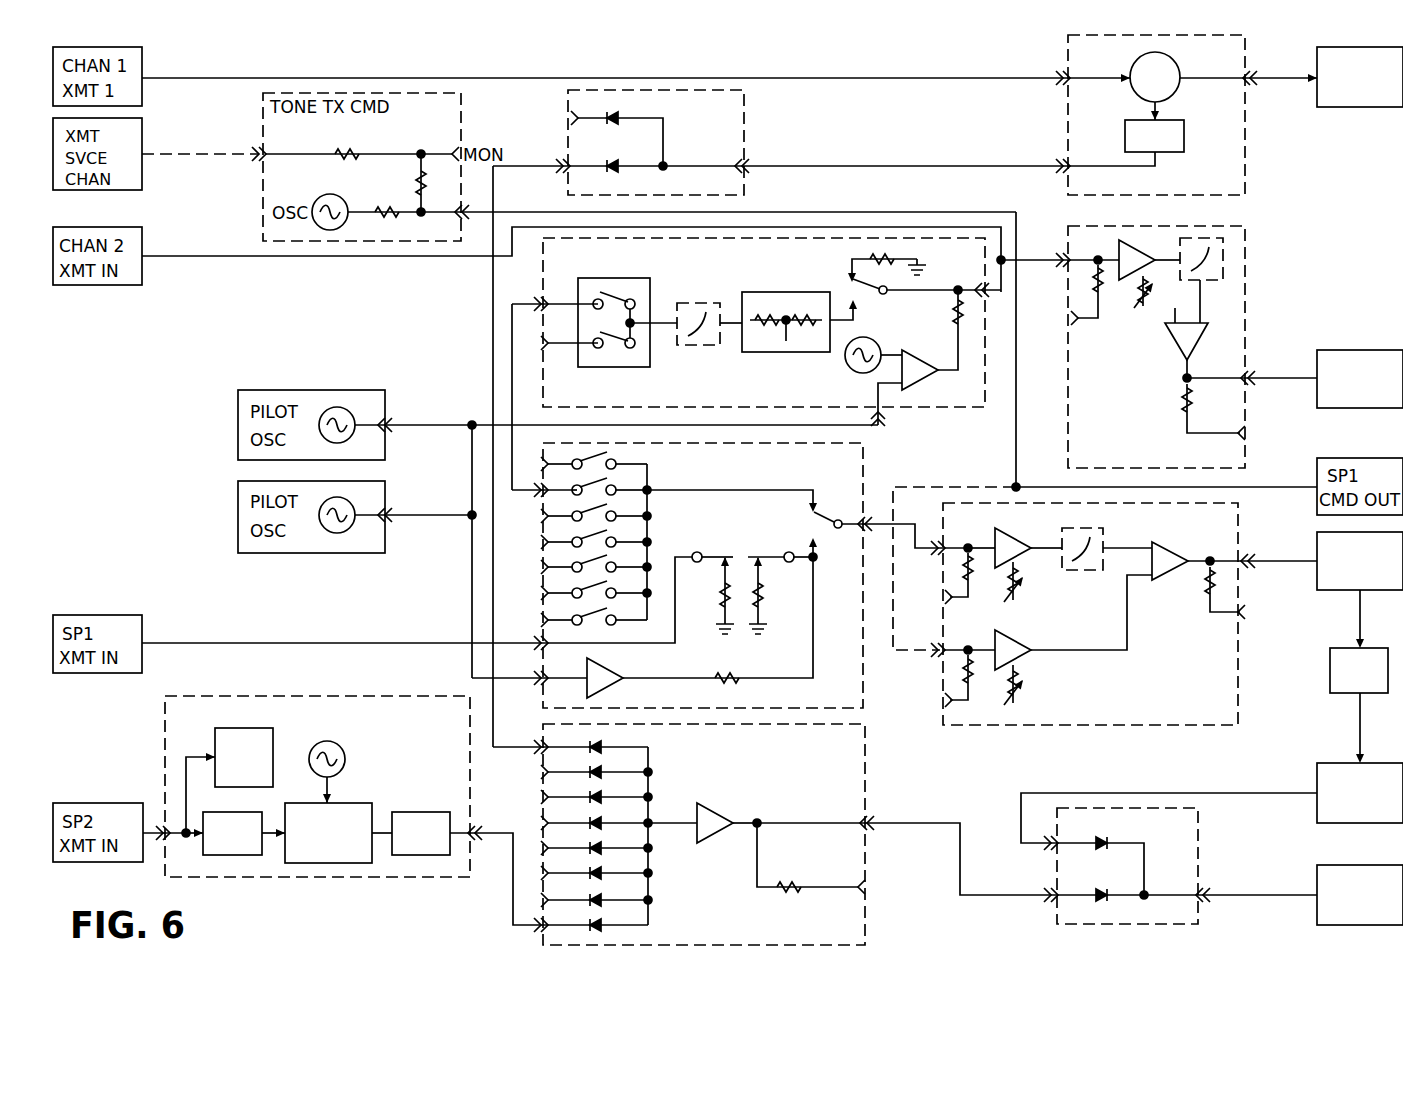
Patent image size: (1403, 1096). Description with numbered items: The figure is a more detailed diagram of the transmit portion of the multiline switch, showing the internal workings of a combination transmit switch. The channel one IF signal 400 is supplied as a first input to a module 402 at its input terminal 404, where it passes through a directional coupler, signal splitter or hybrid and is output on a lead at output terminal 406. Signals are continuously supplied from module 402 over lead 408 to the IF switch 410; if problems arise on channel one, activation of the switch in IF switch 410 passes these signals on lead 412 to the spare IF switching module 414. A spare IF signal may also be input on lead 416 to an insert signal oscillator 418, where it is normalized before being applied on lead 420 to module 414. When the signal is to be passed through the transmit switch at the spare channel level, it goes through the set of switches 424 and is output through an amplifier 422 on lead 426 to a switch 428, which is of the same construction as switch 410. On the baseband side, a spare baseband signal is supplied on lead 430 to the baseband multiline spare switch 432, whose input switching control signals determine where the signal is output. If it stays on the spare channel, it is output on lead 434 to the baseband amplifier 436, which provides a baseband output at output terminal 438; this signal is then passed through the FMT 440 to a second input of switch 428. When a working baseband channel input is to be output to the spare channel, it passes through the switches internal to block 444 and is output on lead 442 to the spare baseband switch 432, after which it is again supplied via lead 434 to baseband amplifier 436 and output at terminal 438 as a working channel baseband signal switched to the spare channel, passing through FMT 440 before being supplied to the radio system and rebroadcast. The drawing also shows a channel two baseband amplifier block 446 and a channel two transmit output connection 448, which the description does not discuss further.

The channel 1 signal 400 is at (200, 77).
The module 402 is at (1246, 133).
The input terminal 404 is at (1066, 77).
The output terminal 406 is at (1248, 78).
The lead 408 is at (1066, 166).
The IF switch 410 is at (745, 118).
The lead 412 is at (508, 318).
The spare IF switching module 414 is at (714, 834).
The lead 416 is at (149, 831).
The insert signal oscillator 418 is at (165, 740).
The lead 420 is at (492, 833).
The amplifier 422 is at (716, 812).
The set of switches 424 is at (703, 757).
The lead 426 is at (898, 823).
The switch 428 is at (1200, 832).
The lead 430 is at (268, 643).
The baseband multiline spare switch 432 is at (866, 478).
The lead 434 is at (880, 528).
The baseband amplifier 436 is at (1002, 726).
The output terminal 438 is at (1247, 558).
The FMT 440 is at (1330, 672).
The lead 442 is at (522, 492).
The block 444 is at (952, 407).
The channel 2 baseband amplifier 446 is at (1246, 268).
The channel 2 transmit output connector 448 is at (1247, 378).